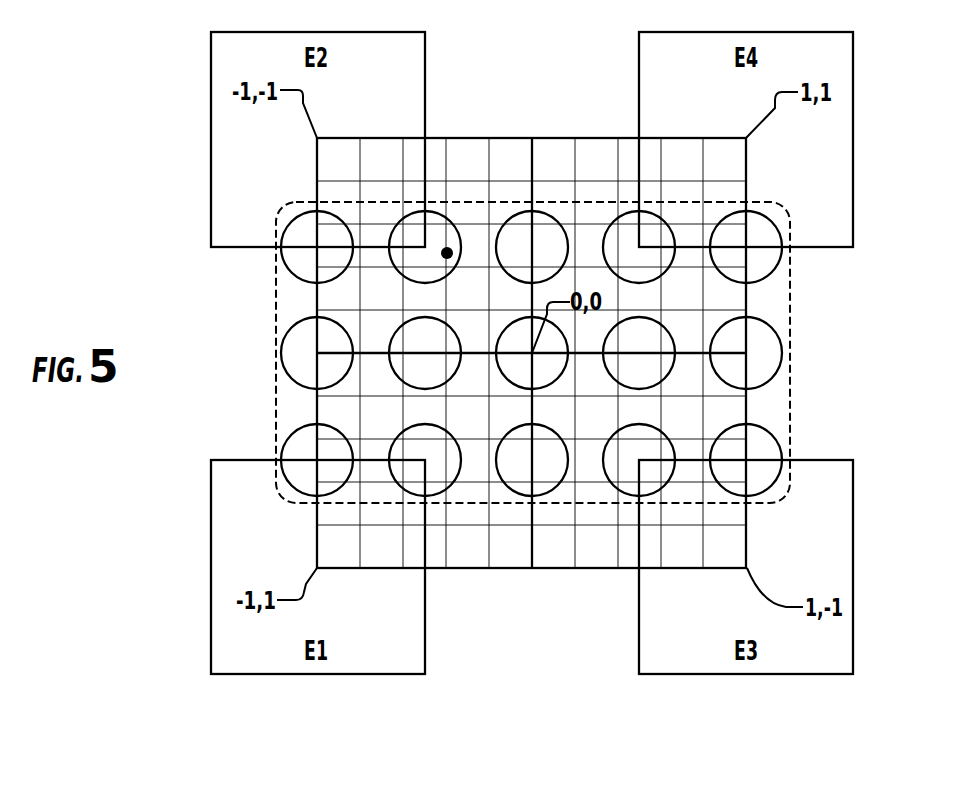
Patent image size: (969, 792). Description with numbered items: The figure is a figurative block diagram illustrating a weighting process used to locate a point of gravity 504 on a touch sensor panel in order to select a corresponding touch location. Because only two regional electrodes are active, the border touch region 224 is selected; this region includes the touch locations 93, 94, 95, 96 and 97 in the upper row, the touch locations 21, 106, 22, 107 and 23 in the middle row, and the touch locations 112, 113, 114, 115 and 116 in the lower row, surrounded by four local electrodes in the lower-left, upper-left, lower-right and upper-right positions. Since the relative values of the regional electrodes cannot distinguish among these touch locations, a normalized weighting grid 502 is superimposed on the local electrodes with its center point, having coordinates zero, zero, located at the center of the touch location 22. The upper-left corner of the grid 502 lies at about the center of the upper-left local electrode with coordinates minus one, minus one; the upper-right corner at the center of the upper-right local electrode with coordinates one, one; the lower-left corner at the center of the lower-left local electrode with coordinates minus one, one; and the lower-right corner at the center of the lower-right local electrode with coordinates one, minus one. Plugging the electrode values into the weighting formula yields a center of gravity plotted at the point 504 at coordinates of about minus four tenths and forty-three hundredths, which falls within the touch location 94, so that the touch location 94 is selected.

The normalized weighting grid 502 is at (746, 410).
The border touch region 224 is at (790, 290).
The point of gravity 504 is at (447, 253).
The touch location 93 is at (317, 247).
The touch location 94 is at (425, 247).
The touch location 95 is at (532, 247).
The touch location 96 is at (639, 247).
The touch location 97 is at (746, 247).
The touch location 21 is at (317, 353).
The touch location 106 is at (425, 353).
The touch location 22 is at (532, 353).
The touch location 107 is at (639, 353).
The touch location 23 is at (746, 353).
The touch location 112 is at (317, 460).
The touch location 113 is at (425, 460).
The touch location 114 is at (532, 460).
The touch location 115 is at (639, 460).
The touch location 116 is at (746, 460).